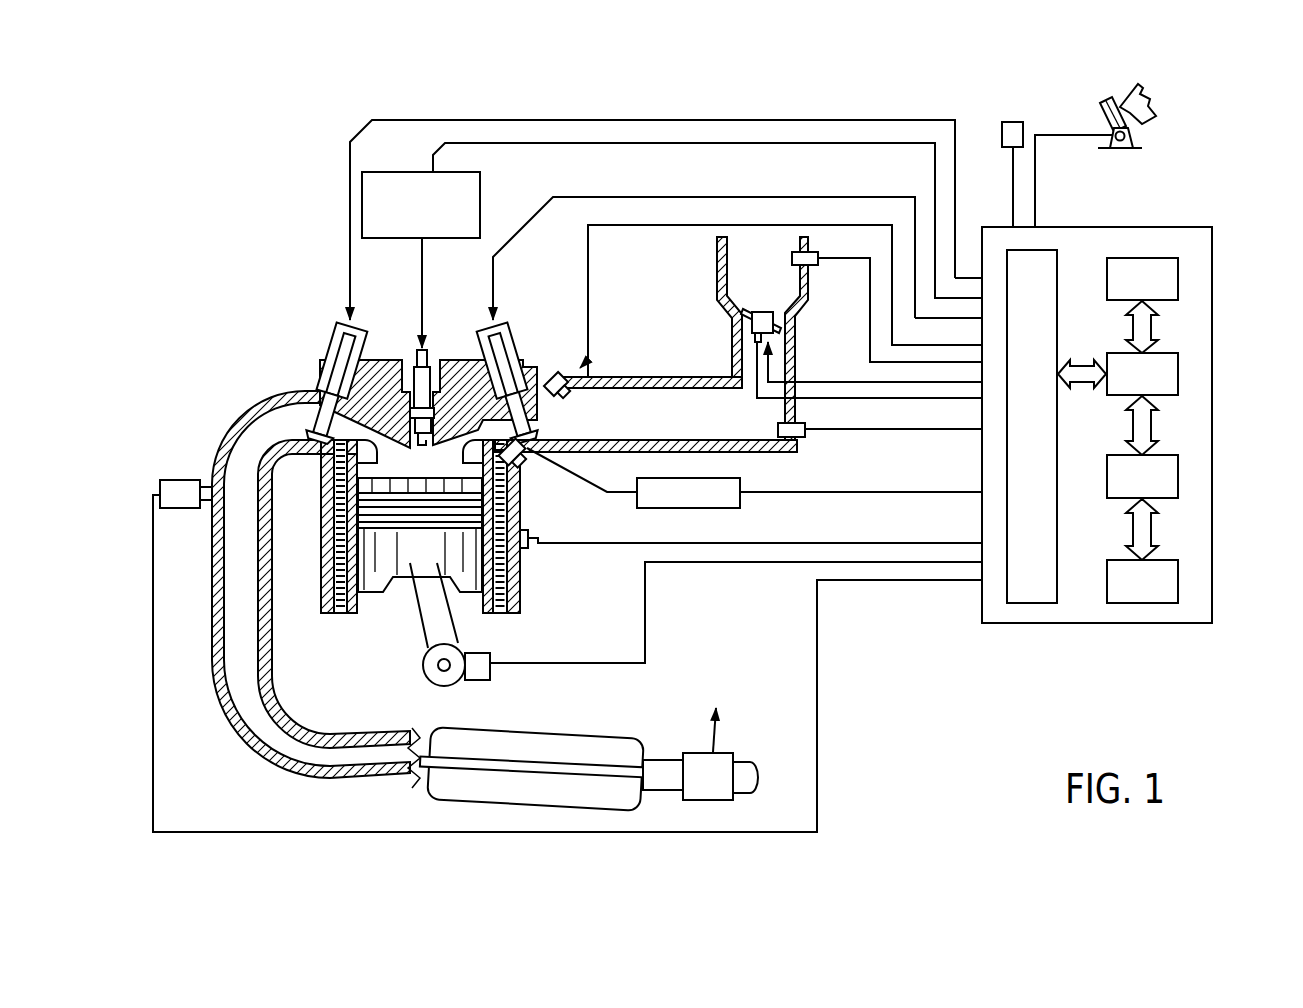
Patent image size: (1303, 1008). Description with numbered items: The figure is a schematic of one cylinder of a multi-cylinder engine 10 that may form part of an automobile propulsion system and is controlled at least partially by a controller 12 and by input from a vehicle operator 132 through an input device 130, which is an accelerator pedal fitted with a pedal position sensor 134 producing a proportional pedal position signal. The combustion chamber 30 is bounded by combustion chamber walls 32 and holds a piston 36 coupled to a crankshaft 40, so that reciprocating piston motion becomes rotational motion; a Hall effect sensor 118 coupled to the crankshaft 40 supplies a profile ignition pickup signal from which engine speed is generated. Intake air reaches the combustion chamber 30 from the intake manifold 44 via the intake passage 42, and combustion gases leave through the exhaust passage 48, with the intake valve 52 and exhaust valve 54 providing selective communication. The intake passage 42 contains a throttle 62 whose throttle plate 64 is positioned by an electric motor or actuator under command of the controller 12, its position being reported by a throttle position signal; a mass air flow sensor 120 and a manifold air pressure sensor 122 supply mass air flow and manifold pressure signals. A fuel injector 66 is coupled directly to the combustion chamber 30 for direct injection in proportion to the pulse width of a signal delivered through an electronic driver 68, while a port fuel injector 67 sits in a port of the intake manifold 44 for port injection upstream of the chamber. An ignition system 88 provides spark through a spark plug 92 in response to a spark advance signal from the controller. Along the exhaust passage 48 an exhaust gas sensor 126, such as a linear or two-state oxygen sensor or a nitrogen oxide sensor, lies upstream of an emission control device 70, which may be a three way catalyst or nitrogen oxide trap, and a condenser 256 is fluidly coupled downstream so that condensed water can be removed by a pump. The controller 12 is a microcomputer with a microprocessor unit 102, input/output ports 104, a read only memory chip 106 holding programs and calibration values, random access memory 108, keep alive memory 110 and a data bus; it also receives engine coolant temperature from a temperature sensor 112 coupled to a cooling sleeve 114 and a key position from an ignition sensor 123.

The engine 10 is at (250, 310).
The controller 12 is at (1200, 227).
The combustion chamber 30 is at (420, 460).
The combustion chamber walls 32 is at (363, 603).
The piston 36 is at (422, 557).
The crankshaft 40 is at (430, 680).
The intake passage 42 is at (770, 287).
The intake manifold 44 is at (657, 425).
The exhaust passage 48 is at (297, 432).
The intake valve 52 is at (463, 430).
The exhaust valve 54 is at (318, 392).
The throttle 62 is at (783, 317).
The throttle plate 64 is at (743, 316).
The fuel injector 66 is at (518, 470).
The port fuel injector 67 is at (548, 378).
The electronic driver 68 is at (655, 508).
The emission control device 70 is at (603, 730).
The ignition system 88 is at (380, 172).
The spark plug 92 is at (430, 375).
The microprocessor unit 102 is at (1180, 370).
The input/output ports 104 is at (1060, 258).
The read only memory chip 106 is at (1180, 278).
The random access memory 108 is at (1180, 475).
The keep alive memory 110 is at (1180, 580).
The temperature sensor 112 is at (530, 535).
The cooling sleeve 114 is at (520, 562).
The Hall effect sensor 118 is at (478, 682).
The mass air flow sensor 120 is at (818, 252).
The manifold air pressure sensor 122 is at (802, 440).
The ignition sensor 123 is at (1004, 135).
The exhaust gas sensor 126 is at (160, 482).
The input device 130 is at (1105, 115).
The vehicle operator 132 is at (1158, 103).
The pedal position sensor 134 is at (1132, 138).
The condenser 256 is at (723, 752).